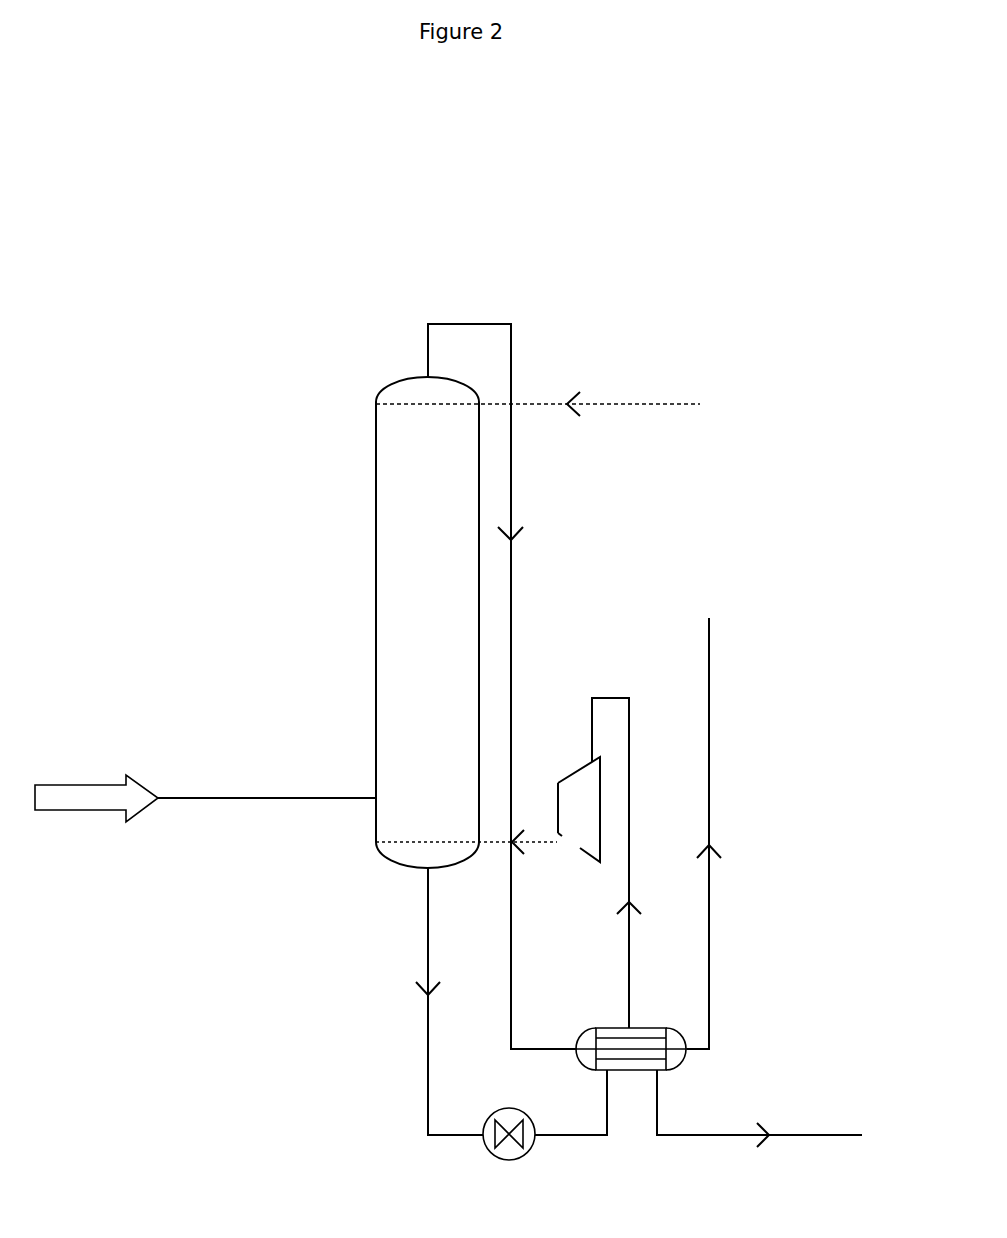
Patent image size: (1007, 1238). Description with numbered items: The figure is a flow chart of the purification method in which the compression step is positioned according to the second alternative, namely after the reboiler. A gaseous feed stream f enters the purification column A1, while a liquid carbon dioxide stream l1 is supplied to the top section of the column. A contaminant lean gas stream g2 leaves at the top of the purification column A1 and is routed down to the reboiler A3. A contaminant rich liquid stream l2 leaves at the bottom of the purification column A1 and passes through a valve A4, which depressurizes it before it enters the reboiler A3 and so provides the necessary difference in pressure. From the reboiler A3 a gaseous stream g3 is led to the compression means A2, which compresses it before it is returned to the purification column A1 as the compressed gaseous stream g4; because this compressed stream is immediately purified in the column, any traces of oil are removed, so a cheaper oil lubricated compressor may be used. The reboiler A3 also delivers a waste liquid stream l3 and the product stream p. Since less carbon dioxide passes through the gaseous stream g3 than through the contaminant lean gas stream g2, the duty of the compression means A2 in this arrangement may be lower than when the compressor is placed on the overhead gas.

The purification column A1 is at (427, 622).
The compression means A2 is at (579, 809).
The reboiler A3 is at (643, 1050).
The valve A4 is at (545, 1135).
The feed stream f is at (205, 793).
The liquid carbon dioxide stream l1 is at (538, 395).
The contaminant rich liquid stream l2 is at (440, 1001).
The waste liquid stream l3 is at (759, 1108).
The contaminant lean gas stream g2 is at (502, 686).
The gaseous stream g3 is at (631, 863).
The compressed gaseous stream g4 is at (466, 851).
The product stream p is at (711, 833).